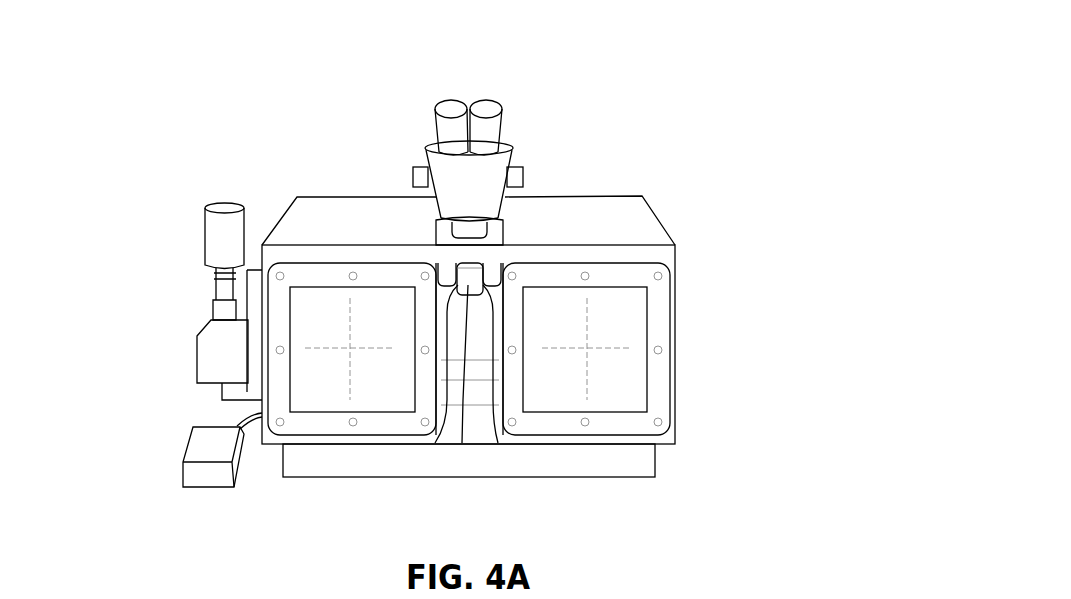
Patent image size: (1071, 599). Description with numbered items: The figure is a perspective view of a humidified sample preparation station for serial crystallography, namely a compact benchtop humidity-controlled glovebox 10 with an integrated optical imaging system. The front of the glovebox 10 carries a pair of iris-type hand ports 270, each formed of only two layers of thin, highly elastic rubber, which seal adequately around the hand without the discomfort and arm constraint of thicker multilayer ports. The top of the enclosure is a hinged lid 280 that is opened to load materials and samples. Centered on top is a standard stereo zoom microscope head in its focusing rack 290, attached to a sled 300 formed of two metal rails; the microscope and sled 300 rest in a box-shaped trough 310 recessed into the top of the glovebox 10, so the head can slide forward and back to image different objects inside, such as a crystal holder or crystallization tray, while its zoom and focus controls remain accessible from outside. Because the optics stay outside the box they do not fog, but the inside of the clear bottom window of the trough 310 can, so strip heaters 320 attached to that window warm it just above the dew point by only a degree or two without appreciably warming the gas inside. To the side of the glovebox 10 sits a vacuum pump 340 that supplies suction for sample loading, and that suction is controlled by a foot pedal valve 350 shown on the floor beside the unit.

The glovebox 10 is at (158, 47).
The hinged lid 280 is at (325, 233).
The focusing rack 290 is at (490, 190).
The sled 300 is at (453, 262).
The iris-type hand ports 270 is at (612, 387).
The vacuum pump 340 is at (198, 350).
The foot pedal valve 350 is at (190, 440).
The strip heaters 320 is at (435, 443).
The trough 310 is at (462, 443).